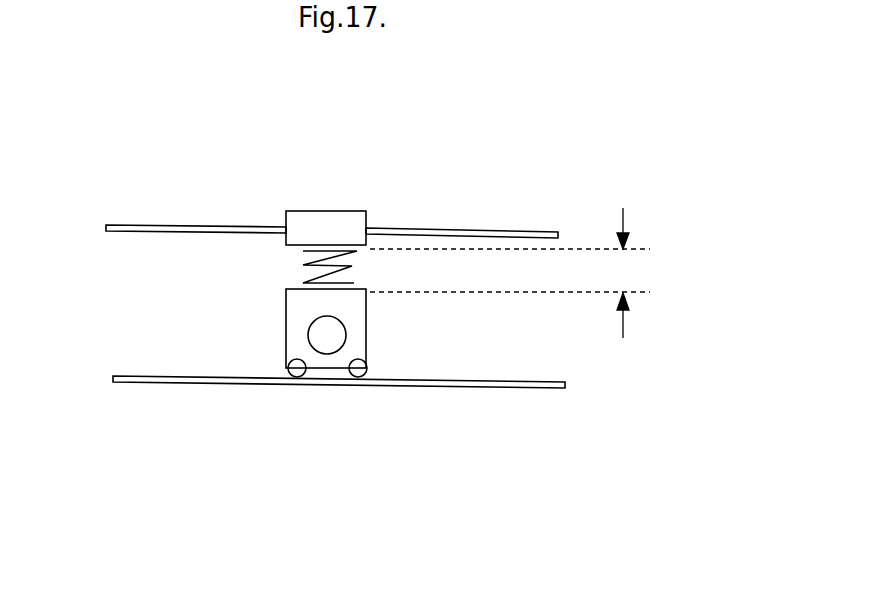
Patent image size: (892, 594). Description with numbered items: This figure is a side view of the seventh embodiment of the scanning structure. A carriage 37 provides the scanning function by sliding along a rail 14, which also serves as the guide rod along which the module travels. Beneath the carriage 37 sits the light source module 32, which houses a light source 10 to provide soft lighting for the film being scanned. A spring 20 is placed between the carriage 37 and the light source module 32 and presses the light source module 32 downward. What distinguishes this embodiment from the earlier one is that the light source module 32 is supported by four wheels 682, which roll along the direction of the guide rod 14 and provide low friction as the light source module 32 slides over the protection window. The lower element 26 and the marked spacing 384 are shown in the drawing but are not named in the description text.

The rail 14 is at (117, 224).
The carriage 37 is at (312, 220).
The spring 20 is at (365, 262).
The light source module 32 is at (298, 298).
The light source 10 is at (335, 341).
The wheels 682 is at (370, 372).
The lower guide plate 26 is at (112, 380).
The gap distance 384 is at (539, 273).